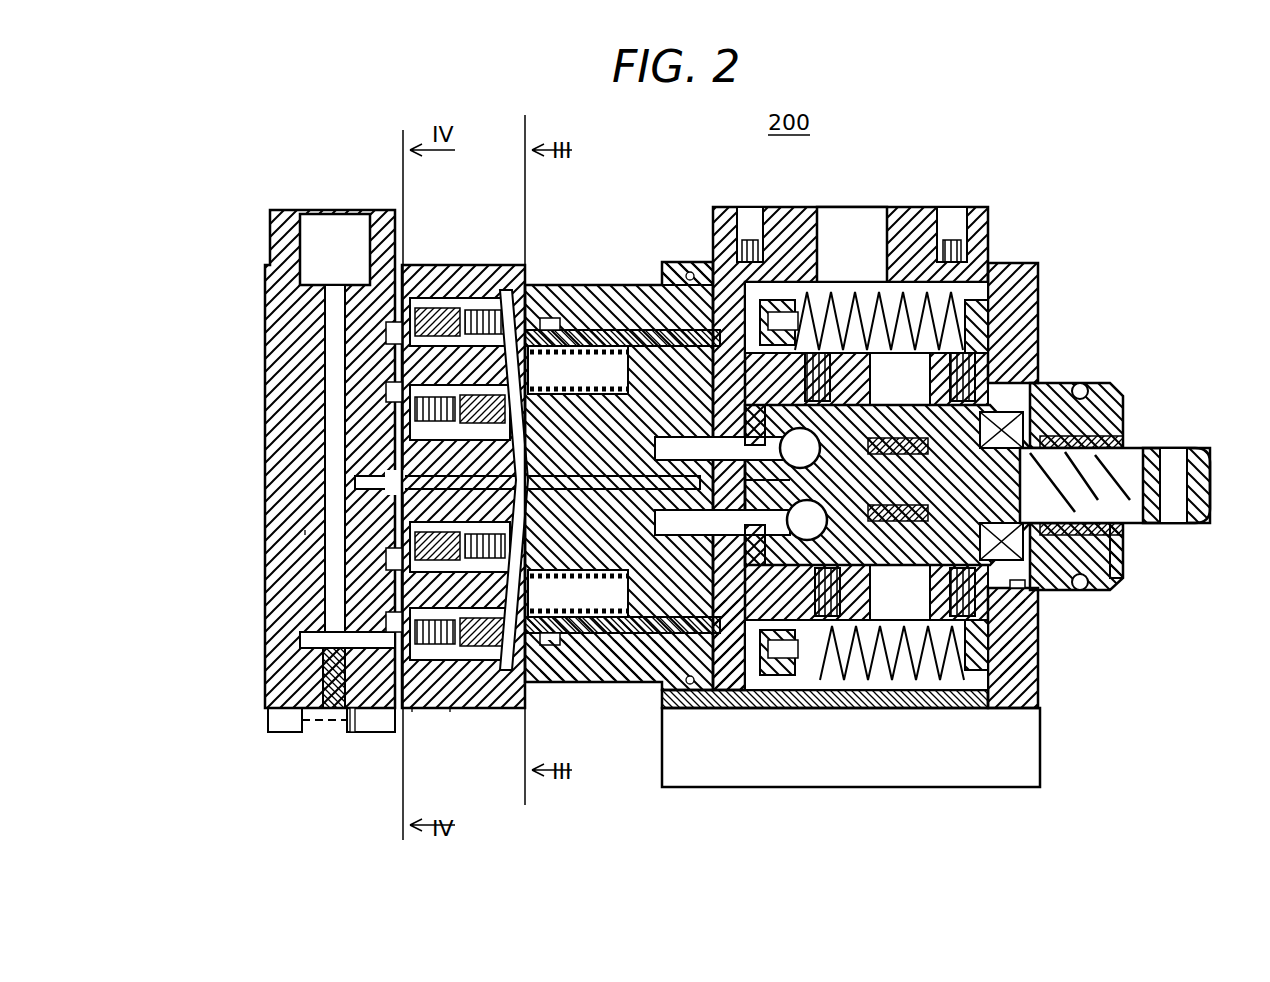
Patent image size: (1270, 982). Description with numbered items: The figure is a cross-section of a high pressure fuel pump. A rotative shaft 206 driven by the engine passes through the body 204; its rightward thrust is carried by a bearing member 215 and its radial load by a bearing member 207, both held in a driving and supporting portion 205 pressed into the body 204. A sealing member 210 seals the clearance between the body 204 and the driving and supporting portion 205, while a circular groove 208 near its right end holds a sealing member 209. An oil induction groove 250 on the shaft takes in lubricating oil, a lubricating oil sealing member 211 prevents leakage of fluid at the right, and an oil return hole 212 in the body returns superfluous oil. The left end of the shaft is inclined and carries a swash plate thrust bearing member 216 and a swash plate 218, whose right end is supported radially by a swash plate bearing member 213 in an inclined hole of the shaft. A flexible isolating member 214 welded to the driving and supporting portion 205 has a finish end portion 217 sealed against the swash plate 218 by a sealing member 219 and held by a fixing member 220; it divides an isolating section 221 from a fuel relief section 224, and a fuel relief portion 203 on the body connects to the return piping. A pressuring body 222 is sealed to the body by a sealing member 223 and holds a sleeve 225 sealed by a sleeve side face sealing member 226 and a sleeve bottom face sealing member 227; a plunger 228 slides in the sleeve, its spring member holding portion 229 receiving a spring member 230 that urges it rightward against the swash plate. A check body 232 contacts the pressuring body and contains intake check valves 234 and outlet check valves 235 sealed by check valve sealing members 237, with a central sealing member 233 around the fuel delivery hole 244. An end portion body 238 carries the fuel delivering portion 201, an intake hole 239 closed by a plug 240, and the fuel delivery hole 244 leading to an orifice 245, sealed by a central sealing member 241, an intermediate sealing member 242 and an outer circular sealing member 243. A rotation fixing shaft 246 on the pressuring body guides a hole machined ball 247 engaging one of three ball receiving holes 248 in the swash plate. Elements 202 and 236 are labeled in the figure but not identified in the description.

The fuel delivering portion 201 is at (348, 236).
The drain port 202 is at (320, 730).
The fuel relief portion 203 is at (840, 232).
The body 204 is at (1040, 322).
The driving and supporting portion 205 is at (1115, 392).
The rotative shaft 206 is at (1195, 450).
The bearing member 207 is at (1125, 532).
The circular groove 208 is at (1068, 590).
The sealing member 209 is at (1085, 592).
The sealing member 210 is at (1022, 612).
The lubricating oil sealing member 211 is at (1012, 405).
The oil return hole 212 is at (1122, 562).
The swash plate bearing member 213 is at (887, 700).
The flexible isolating member 214 is at (762, 236).
The bearing member 215 is at (1030, 682).
The swash plate thrust bearing member 216 is at (825, 700).
The finish end portion 217 is at (775, 700).
The swash plate 218 is at (696, 272).
The sealing member 219 is at (700, 700).
The fixing member 220 is at (732, 692).
The isolating section 221 is at (866, 486).
The pressuring body 222 is at (636, 300).
The sealing member 223 is at (668, 268).
The fuel relief section 224 is at (988, 292).
The sleeve 225 is at (615, 322).
The sleeve side face sealing member 226 is at (565, 312).
The sleeve bottom face sealing member 227 is at (538, 318).
The plunger 228 is at (652, 692).
The spring member holding portion 229 is at (625, 685).
The spring member 230 is at (560, 688).
The check body 232 is at (476, 265).
The central sealing member 233 is at (305, 530).
The intake check valves 234 is at (412, 710).
The outlet check valves 235 is at (450, 710).
The check valve plate 236 is at (513, 300).
The check valve sealing members 237 is at (452, 295).
The end portion body 238 is at (270, 214).
The intake hole 239 is at (335, 315).
The plug 240 is at (352, 712).
The central sealing member 241 is at (385, 482).
The intermediate sealing member 242 is at (305, 598).
The outer circular sealing member 243 is at (305, 663).
The fuel delivery hole 244 is at (352, 497).
The orifice 245 is at (648, 740).
The rotation fixing shaft 246 is at (722, 486).
The hole machined ball 247 is at (670, 720).
The ball receiving holes 248 is at (660, 780).
The oil induction groove 250 is at (1125, 456).